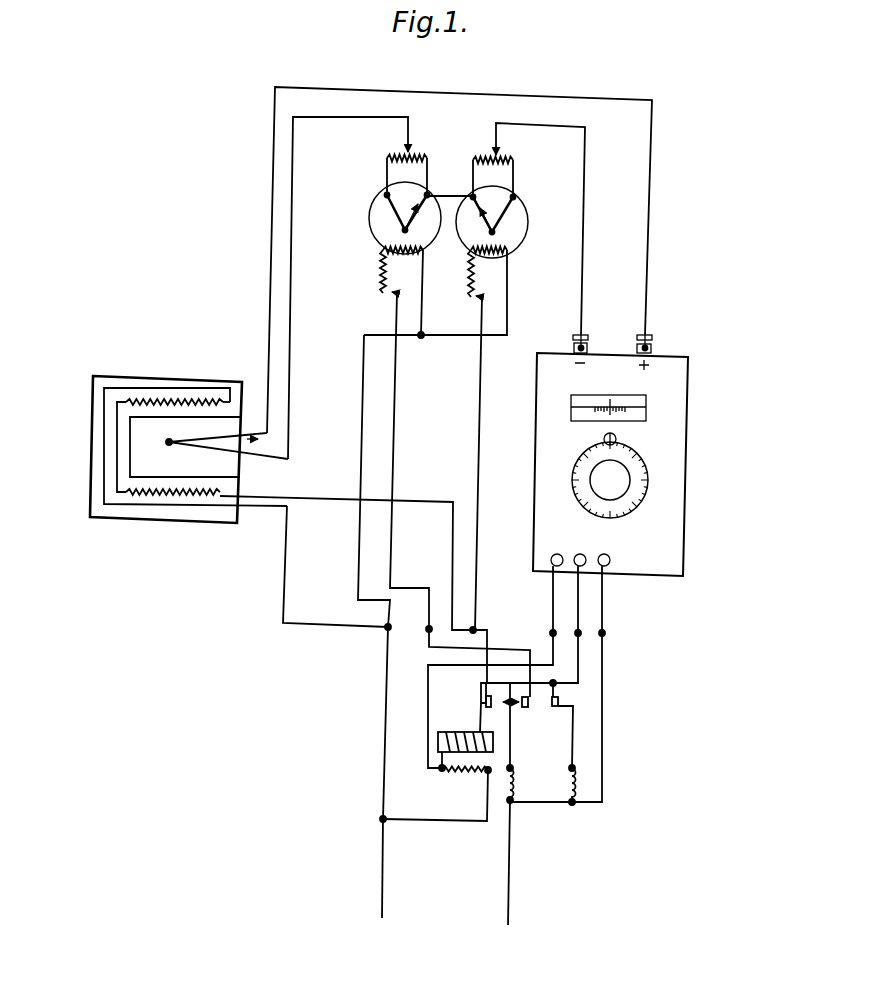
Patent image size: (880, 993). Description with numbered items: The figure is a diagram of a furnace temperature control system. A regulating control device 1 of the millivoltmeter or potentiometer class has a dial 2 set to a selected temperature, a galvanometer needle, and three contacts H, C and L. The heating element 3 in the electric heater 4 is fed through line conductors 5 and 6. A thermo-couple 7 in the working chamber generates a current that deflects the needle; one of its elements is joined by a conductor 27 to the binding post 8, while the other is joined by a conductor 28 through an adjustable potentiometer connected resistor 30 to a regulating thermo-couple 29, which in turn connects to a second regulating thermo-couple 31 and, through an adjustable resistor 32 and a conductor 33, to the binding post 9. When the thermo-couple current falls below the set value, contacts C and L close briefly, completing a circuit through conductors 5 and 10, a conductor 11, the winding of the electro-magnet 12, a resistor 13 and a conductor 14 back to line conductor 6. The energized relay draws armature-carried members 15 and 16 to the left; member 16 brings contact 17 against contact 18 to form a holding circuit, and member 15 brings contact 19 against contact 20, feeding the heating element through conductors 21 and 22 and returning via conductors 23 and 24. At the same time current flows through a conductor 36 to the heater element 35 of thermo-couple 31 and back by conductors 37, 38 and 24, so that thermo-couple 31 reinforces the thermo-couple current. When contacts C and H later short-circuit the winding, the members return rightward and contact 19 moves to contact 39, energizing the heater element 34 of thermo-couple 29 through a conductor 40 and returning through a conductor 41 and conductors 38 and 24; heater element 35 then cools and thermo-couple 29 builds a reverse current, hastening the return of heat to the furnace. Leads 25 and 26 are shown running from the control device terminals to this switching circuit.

The regulating control device 1 is at (693, 437).
The dial 2 is at (645, 506).
The heating element 3 is at (104, 472).
The electric heater 4 is at (86, 445).
The line conductor 5 is at (510, 880).
The line conductor 6 is at (383, 870).
The thermo-couple 7 is at (168, 434).
The binding post 8 is at (652, 336).
The binding post 9 is at (576, 334).
The conductor 10 is at (603, 718).
The conductor 11 is at (481, 689).
The electro-magnet 12 is at (434, 741).
The resistor 13 is at (465, 777).
The conductor 14 is at (445, 823).
The member 15 is at (511, 767).
The member 16 is at (570, 762).
The contact 17 is at (567, 702).
The contact 18 is at (556, 708).
The contact 19 is at (510, 696).
The contact 20 is at (485, 702).
The conductor 21 is at (489, 637).
The conductor 22 is at (322, 499).
The conductor 23 is at (351, 629).
The conductor 24 is at (385, 718).
The lead from C terminal 25 is at (580, 613).
The lead from H terminal 26 is at (554, 607).
The conductor 27 is at (648, 236).
The conductor 28 is at (294, 368).
The regulating thermo-couple 29 is at (379, 212).
The adjustable potentiometer connected resistor 30 is at (404, 157).
The regulating thermo-couple 31 is at (516, 213).
The adjustable resistor 32 is at (508, 160).
The conductor 33 is at (586, 172).
The heater element 34 is at (413, 249).
The heater element 35 is at (488, 249).
The conductor 36 is at (481, 444).
The conductor 37 is at (450, 338).
The conductor 38 is at (358, 546).
The contact 39 is at (526, 709).
The conductor 40 is at (433, 648).
The conductor 41 is at (422, 292).